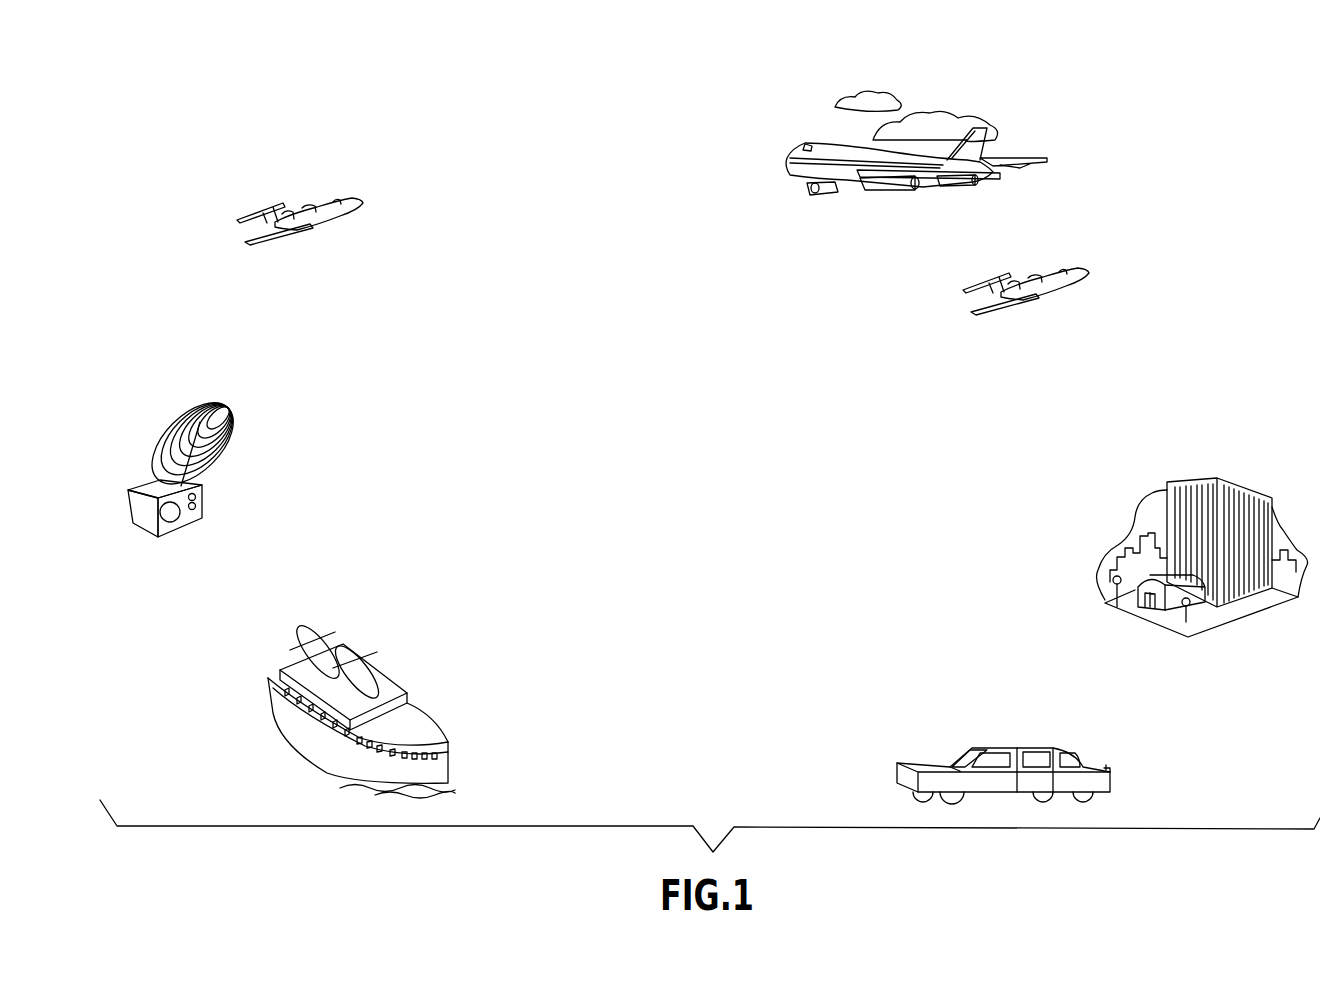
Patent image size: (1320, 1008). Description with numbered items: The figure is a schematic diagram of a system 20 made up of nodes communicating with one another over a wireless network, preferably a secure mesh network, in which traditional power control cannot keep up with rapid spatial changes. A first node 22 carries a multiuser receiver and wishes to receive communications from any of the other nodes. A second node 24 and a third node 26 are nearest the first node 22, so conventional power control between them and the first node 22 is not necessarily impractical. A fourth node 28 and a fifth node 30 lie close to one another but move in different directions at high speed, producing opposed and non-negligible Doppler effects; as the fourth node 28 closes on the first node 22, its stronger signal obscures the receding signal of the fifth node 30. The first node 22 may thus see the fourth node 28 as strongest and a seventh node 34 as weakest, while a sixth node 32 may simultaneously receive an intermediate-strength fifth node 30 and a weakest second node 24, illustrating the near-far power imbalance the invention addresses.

The system 20 is at (566, 182).
The first node 22 is at (334, 223).
The second node 24 is at (147, 487).
The third node 26 is at (395, 683).
The fourth node 28 is at (873, 193).
The fifth node 30 is at (1062, 293).
The sixth node 32 is at (1230, 623).
The seventh node 34 is at (1022, 748).